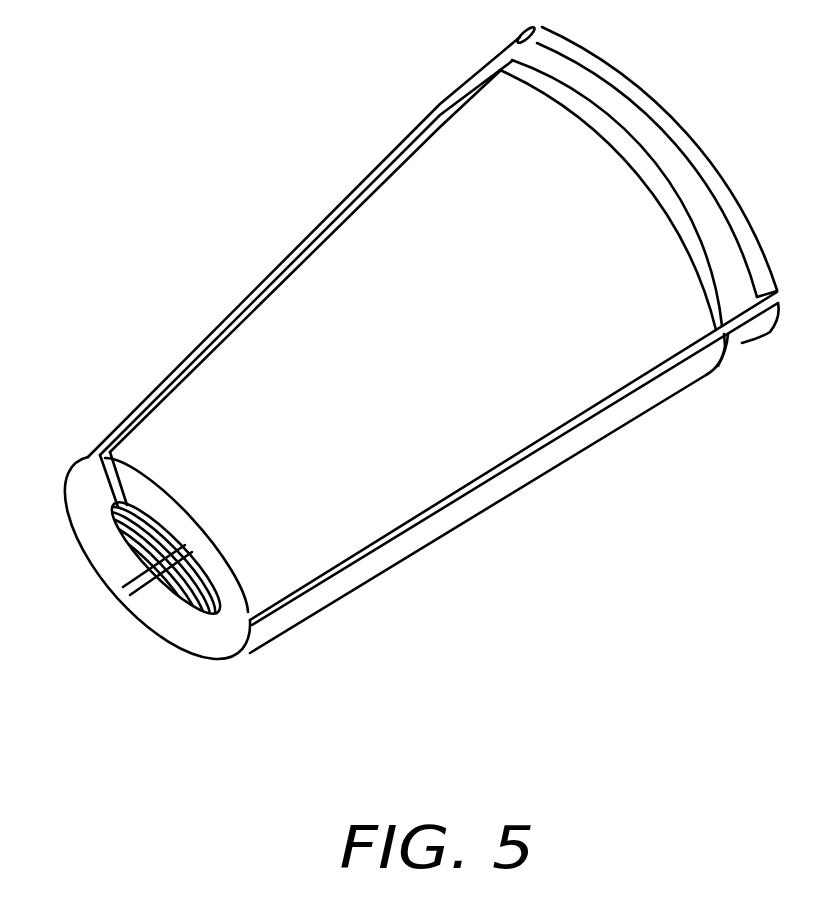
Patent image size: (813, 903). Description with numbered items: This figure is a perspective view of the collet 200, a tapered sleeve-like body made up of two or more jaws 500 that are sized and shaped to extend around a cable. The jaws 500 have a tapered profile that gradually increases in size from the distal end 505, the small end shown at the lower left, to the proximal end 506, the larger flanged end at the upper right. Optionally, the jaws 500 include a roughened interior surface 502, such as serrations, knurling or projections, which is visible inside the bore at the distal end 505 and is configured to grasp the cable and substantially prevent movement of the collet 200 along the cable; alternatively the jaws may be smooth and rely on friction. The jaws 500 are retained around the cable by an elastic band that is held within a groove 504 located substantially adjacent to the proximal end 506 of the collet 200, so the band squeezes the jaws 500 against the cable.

The collet 200 is at (627, 426).
The jaws 500 is at (289, 251).
The roughened interior surface 502 is at (130, 557).
The groove 504 is at (730, 357).
The distal end 505 is at (231, 667).
The proximal end 506 is at (641, 92).